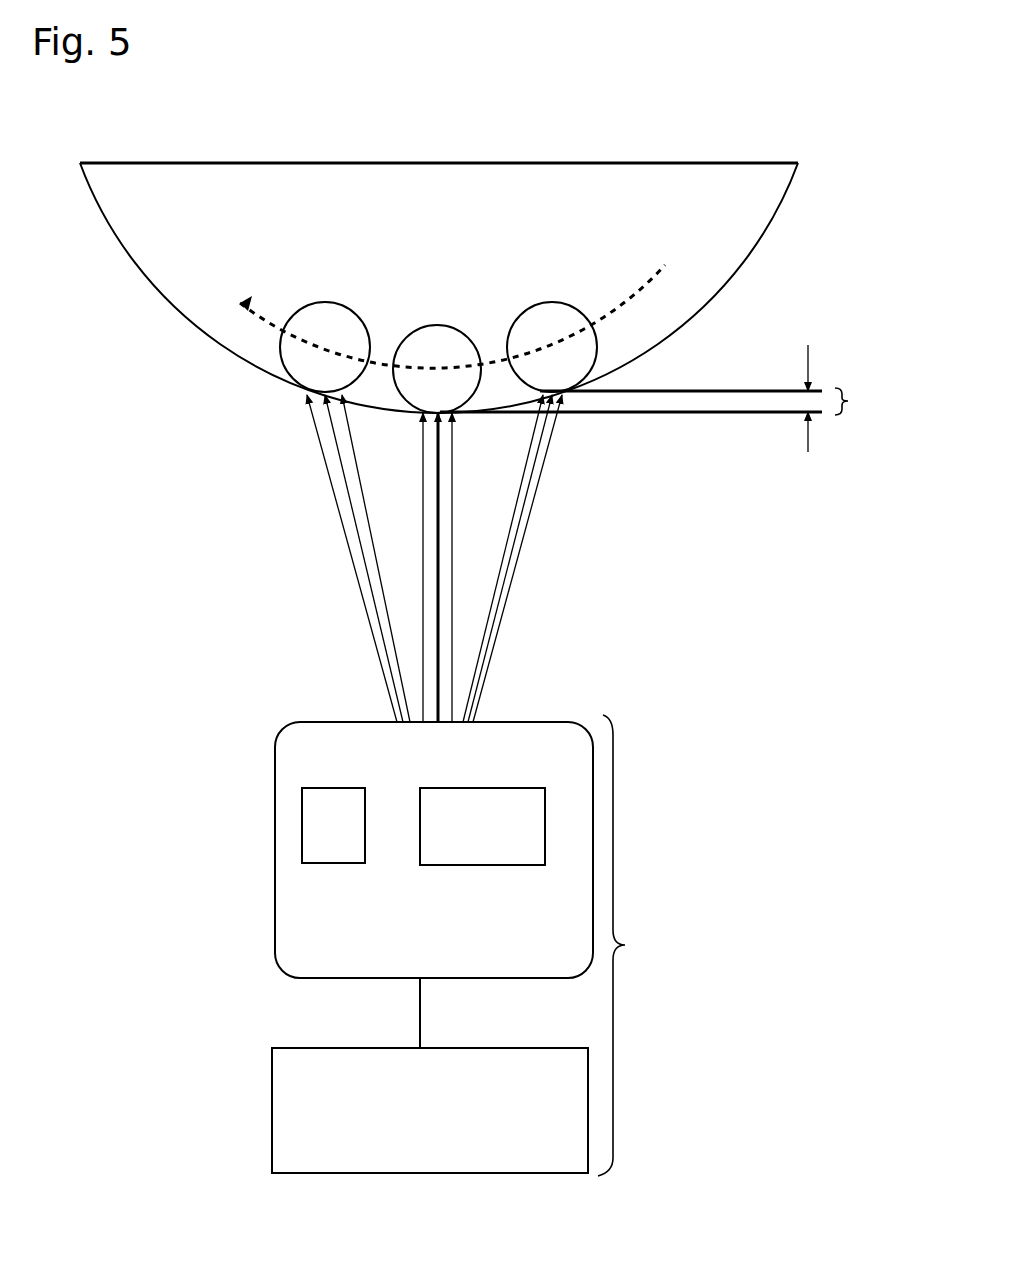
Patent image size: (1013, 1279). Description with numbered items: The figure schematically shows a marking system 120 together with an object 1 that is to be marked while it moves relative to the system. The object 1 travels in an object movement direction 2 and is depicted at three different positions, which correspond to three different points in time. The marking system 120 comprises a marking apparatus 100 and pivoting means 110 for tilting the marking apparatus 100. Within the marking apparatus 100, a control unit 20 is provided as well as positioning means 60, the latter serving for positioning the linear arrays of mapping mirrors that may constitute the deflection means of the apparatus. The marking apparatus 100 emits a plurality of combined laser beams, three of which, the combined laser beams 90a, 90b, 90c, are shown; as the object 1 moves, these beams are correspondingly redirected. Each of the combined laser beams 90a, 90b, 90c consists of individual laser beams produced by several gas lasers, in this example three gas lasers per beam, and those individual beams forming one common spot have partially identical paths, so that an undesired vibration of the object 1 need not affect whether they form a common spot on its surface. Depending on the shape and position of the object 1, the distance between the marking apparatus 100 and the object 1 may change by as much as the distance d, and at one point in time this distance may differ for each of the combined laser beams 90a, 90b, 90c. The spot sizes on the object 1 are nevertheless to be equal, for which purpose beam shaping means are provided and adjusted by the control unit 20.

The object 1 is at (330, 325).
The object movement direction 2 is at (270, 322).
The combined laser beam 90a is at (382, 593).
The combined laser beam 90b is at (356, 536).
The combined laser beam 90c is at (332, 472).
The distance d is at (658, 398).
The marking apparatus 100 is at (452, 934).
The positioning means 60 is at (347, 838).
The control unit 20 is at (497, 838).
The pivoting means 110 is at (448, 1124).
The marking system 120 is at (649, 945).